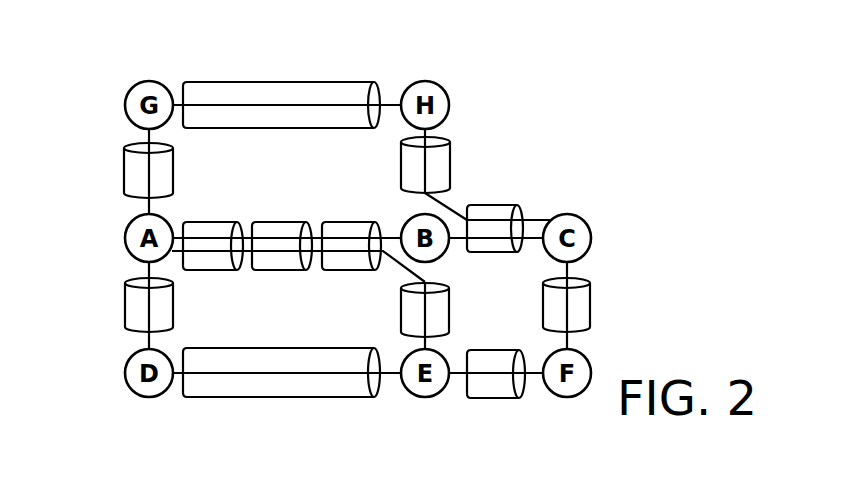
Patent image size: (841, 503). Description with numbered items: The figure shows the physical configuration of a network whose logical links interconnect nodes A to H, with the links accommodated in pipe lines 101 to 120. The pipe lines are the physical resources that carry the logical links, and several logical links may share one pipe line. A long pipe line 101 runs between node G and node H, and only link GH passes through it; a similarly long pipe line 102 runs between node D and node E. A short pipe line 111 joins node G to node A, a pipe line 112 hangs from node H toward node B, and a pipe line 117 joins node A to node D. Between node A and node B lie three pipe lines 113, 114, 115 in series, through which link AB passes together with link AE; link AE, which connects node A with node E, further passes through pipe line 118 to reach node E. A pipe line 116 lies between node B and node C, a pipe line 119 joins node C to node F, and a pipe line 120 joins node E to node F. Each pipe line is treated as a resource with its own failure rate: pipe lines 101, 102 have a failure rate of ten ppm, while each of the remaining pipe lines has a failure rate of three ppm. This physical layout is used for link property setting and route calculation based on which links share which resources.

The pipe line 101 is at (340, 78).
The pipe line 102 is at (333, 348).
The pipe line 111 is at (124, 167).
The pipe line 112 is at (450, 155).
The pipe line 113 is at (217, 222).
The pipe line 114 is at (280, 222).
The pipe line 115 is at (350, 222).
The pipe line 116 is at (487, 205).
The pipe line 117 is at (125, 312).
The pipe line 118 is at (449, 315).
The pipe line 119 is at (592, 300).
The pipe line 120 is at (493, 398).